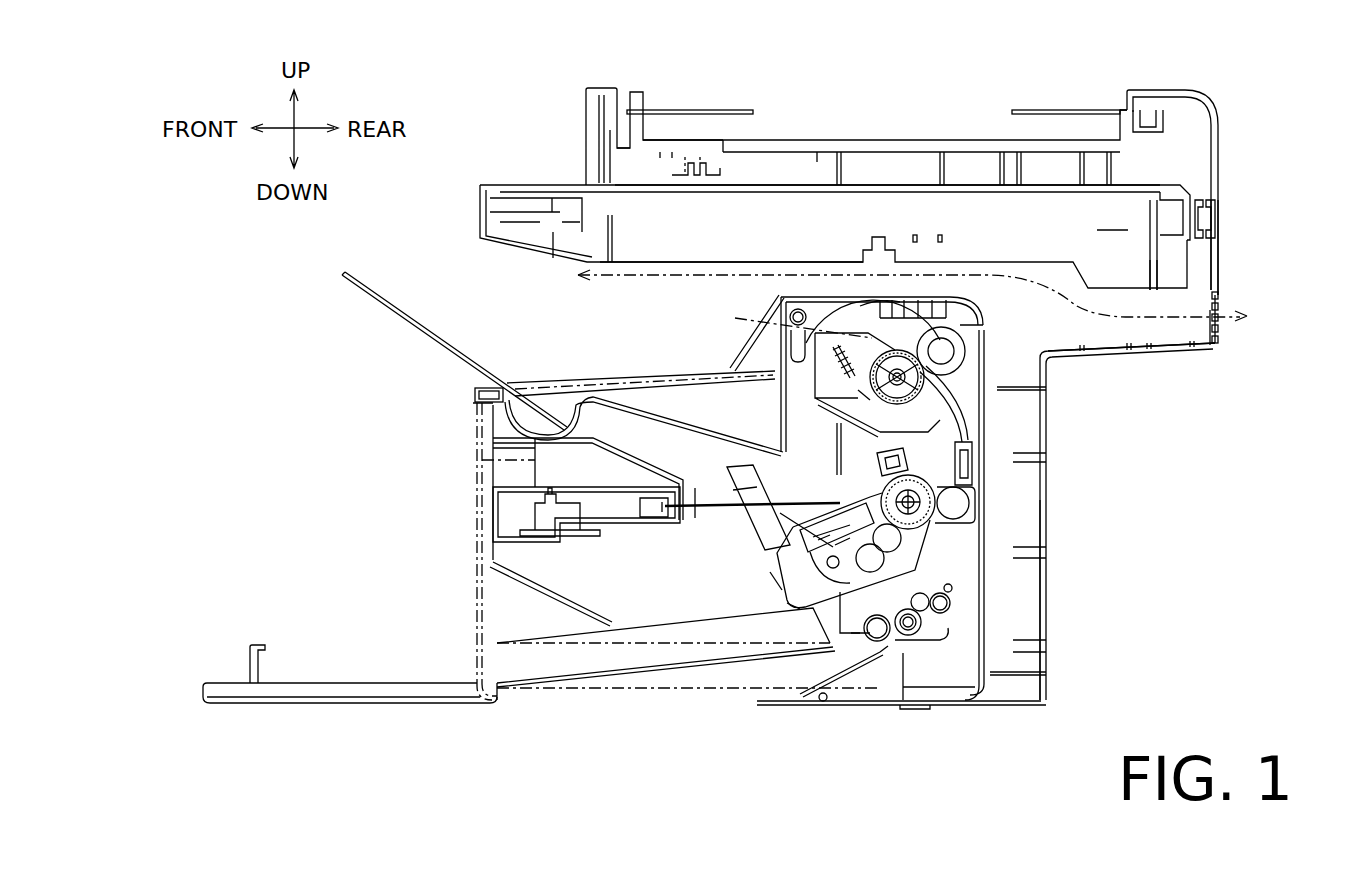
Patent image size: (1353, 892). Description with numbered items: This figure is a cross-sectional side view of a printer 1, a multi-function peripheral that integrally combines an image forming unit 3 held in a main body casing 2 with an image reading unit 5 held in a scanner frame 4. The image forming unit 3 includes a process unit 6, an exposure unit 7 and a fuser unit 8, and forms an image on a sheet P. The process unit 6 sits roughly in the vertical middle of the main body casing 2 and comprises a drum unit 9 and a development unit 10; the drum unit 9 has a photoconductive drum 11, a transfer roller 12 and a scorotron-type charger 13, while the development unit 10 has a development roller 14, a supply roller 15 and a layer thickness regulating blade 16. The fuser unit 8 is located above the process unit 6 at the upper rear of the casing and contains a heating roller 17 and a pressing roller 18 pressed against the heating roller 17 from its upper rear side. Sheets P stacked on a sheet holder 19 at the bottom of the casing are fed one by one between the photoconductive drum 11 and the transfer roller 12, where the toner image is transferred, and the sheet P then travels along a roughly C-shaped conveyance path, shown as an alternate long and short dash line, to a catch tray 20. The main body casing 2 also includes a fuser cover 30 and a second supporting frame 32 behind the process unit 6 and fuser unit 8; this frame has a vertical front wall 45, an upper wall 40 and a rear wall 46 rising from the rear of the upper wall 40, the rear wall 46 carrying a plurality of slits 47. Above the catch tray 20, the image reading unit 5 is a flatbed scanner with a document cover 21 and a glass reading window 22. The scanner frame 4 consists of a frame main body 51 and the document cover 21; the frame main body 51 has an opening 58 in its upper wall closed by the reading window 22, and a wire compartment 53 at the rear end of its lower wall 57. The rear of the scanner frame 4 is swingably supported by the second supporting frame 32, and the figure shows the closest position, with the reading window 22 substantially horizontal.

The printer 1 is at (718, 730).
The main body casing 2 is at (1046, 481).
The image forming unit 3 is at (759, 423).
The scanner frame 4 is at (1222, 245).
The image reading unit 5 is at (863, 178).
The process unit 6 is at (777, 587).
The exposure unit 7 is at (620, 540).
The fuser unit 8 is at (840, 413).
The drum unit 9 is at (787, 603).
The development unit 10 is at (787, 547).
The photoconductive drum 11 is at (937, 482).
The transfer roller 12 is at (957, 505).
The scorotron-type charger 13 is at (878, 460).
The development roller 14 is at (892, 540).
The supply roller 15 is at (832, 604).
The layer thickness regulating blade 16 is at (770, 572).
The heating roller 17 is at (860, 386).
The pressing roller 18 is at (957, 352).
The sheet holder 19 is at (688, 660).
The catch tray 20 is at (732, 427).
The document cover 21 is at (1182, 87).
The reading window 22 is at (853, 193).
The fuser cover 30 is at (867, 302).
The second supporting frame 32 is at (1043, 587).
The upper wall 40 is at (1113, 355).
The front wall 45 is at (1041, 529).
The rear wall 46 is at (1217, 353).
The slits 47 is at (1218, 325).
The frame main body 51 is at (1222, 203).
The wire compartment 53 is at (1155, 293).
The lower wall 57 is at (737, 260).
The opening 58 is at (1117, 187).
The sheet P is at (722, 313).